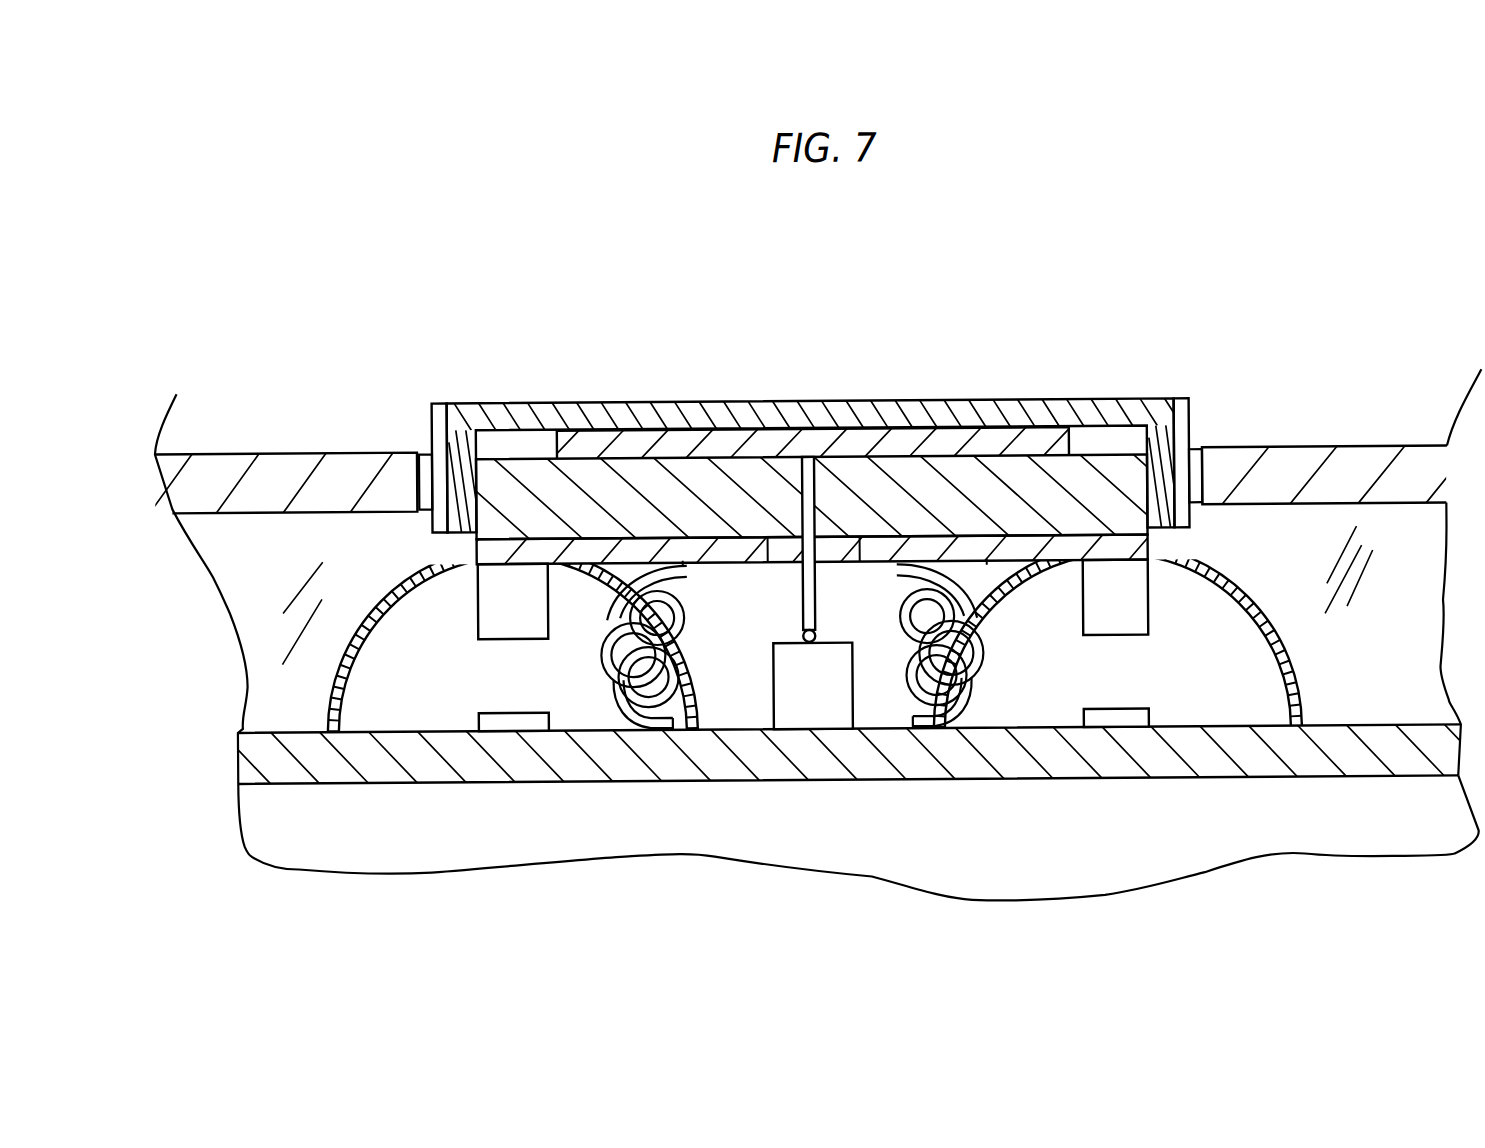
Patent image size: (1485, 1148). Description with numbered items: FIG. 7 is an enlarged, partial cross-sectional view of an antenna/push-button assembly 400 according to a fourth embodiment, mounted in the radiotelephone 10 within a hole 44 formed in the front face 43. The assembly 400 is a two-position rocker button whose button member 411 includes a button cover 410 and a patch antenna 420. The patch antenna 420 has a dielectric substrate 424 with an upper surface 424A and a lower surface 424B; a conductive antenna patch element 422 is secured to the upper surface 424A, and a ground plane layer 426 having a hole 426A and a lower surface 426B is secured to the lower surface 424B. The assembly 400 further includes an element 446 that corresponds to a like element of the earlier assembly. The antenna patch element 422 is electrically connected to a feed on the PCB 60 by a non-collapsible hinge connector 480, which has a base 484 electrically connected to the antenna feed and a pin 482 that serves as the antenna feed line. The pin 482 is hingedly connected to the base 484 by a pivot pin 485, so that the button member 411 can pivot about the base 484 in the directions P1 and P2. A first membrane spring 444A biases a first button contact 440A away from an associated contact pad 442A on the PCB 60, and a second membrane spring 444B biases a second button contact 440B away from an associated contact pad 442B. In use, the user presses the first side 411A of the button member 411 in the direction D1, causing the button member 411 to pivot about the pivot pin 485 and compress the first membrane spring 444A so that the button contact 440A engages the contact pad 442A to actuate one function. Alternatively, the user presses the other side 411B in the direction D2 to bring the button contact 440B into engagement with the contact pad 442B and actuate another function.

The radiotelephone 10 is at (283, 277).
The front face 43 is at (344, 470).
The hole 44 is at (420, 488).
The PCB 60 is at (1028, 766).
The antenna/push-button assembly 400 is at (829, 520).
The button cover 410 is at (522, 412).
The button member 411 is at (871, 395).
The first side of button member 411A is at (545, 401).
The other side of button member 411B is at (1160, 401).
The patch antenna 420 is at (463, 548).
The antenna patch element 422 is at (640, 440).
The dielectric substrate 424 is at (1132, 483).
The upper surface of dielectric substrate 424A is at (1098, 450).
The lower surface of dielectric substrate 424B is at (1137, 553).
The ground plane layer 426 is at (720, 545).
The hole in ground plane layer 426A is at (838, 554).
The lower surface of ground plane layer 426B is at (940, 547).
The first button contact 440A is at (508, 629).
The second button contact 440B is at (1123, 628).
The contact pad 442A is at (497, 720).
The contact pad 442B is at (1123, 716).
The first membrane spring 444A is at (345, 656).
The second membrane spring 444B is at (1282, 650).
The corresponding element 446 is at (660, 722).
The non-collapsible hinge connector 480 is at (812, 567).
The pin 482 is at (808, 401).
The base 484 is at (797, 720).
The pivot pin 485 is at (813, 642).
The direction D1 is at (476, 290).
The direction D2 is at (1101, 292).
The pivot direction P1 is at (800, 567).
The pivot direction P2 is at (818, 567).